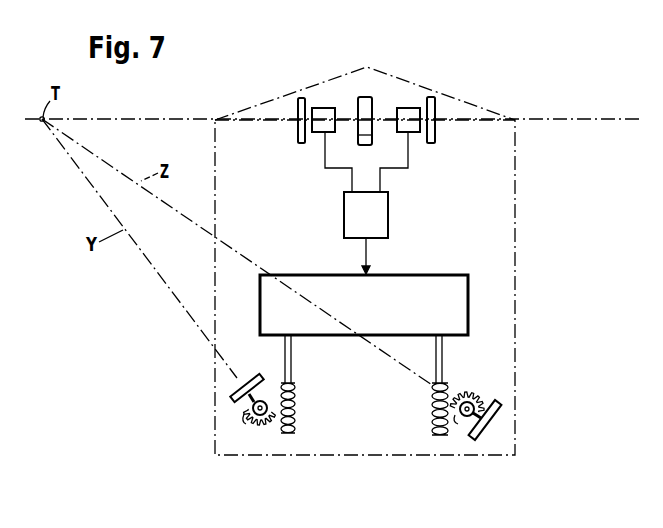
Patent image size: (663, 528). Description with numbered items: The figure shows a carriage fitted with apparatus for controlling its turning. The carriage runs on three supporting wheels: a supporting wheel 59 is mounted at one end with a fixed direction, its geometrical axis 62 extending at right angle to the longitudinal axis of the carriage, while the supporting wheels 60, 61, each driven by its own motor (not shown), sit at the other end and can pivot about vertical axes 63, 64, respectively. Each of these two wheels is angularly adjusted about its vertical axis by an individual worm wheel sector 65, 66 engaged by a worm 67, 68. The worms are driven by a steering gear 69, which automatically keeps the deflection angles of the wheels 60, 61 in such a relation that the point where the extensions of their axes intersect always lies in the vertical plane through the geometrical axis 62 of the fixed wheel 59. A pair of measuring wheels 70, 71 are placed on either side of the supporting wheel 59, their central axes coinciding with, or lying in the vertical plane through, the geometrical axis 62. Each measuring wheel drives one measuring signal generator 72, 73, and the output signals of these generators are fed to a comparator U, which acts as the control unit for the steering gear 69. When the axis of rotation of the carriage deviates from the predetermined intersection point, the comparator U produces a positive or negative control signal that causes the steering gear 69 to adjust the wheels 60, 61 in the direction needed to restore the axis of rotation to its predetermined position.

The supporting wheel 59 is at (365, 97).
The supporting wheel 60 is at (236, 390).
The supporting wheel 61 is at (497, 412).
The geometrical axis 62 is at (558, 118).
The vertical axis 63 is at (258, 428).
The vertical axis 64 is at (467, 416).
The worm wheel sector 65 is at (243, 423).
The worm wheel sector 66 is at (461, 422).
The worm 67 is at (296, 395).
The worm 68 is at (432, 410).
The steering gear 69 is at (450, 283).
The measuring wheel 70 is at (301, 97).
The measuring wheel 71 is at (431, 97).
The measuring signal generator 72 is at (320, 131).
The measuring signal generator 73 is at (412, 131).
The comparator U is at (344, 213).